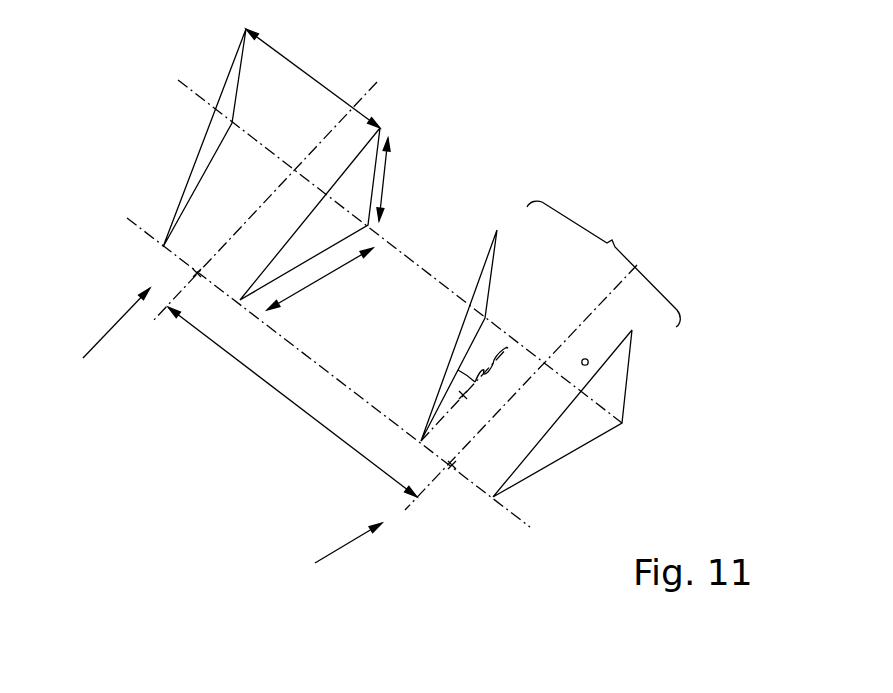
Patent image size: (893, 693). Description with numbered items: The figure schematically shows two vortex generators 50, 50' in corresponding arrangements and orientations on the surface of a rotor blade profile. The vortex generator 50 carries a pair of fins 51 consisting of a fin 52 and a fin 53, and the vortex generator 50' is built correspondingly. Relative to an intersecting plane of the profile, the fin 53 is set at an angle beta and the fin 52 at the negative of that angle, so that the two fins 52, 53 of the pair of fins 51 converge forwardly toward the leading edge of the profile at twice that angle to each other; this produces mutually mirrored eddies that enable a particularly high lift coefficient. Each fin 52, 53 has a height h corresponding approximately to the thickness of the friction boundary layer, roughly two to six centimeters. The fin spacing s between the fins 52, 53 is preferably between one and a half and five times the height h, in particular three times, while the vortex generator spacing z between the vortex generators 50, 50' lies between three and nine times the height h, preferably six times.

The vortex generator 50 is at (339, 557).
The vortex generator 50' is at (105, 337).
The pair of fins 51 is at (613, 240).
The fin 52 is at (615, 372).
The fin 53 is at (493, 277).
The fin spacing s is at (321, 80).
The height h is at (392, 148).
The vortex generator spacing z is at (235, 357).